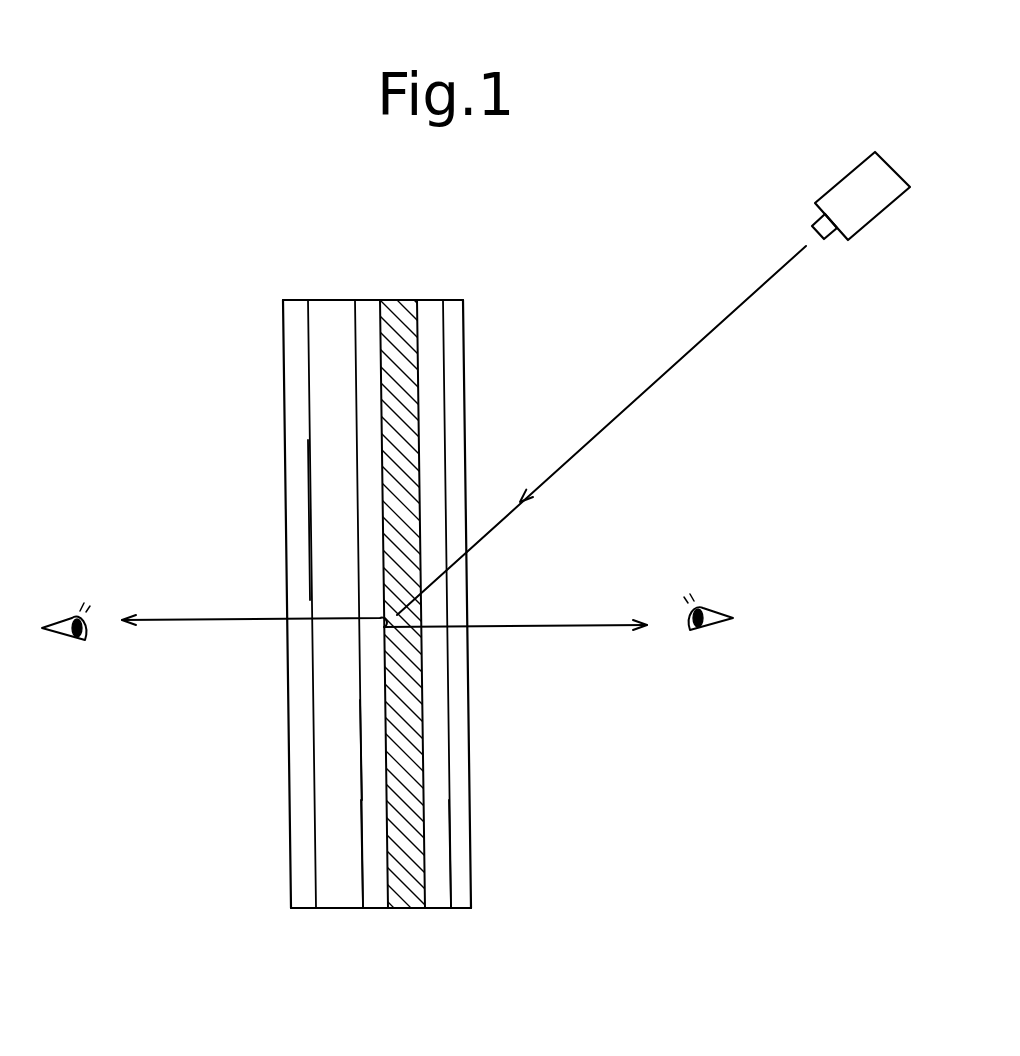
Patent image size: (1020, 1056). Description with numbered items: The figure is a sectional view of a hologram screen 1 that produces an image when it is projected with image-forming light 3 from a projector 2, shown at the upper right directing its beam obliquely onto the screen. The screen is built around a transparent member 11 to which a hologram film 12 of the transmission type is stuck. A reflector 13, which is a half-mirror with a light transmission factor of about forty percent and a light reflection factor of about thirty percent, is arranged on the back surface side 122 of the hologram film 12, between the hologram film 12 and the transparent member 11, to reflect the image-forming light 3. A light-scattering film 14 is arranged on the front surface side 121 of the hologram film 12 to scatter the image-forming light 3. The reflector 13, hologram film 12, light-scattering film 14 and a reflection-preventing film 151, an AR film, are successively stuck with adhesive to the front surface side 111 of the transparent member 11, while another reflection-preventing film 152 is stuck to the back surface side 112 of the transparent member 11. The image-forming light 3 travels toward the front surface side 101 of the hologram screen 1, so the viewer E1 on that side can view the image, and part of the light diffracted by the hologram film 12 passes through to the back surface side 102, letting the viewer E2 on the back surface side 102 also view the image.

The hologram screen 1 is at (262, 836).
The projector 2 is at (870, 208).
The image-forming light 3 is at (705, 335).
The transparent member 11 is at (328, 322).
The hologram film 12 is at (402, 318).
The reflector 13 is at (367, 757).
The light-scattering film 14 is at (440, 877).
The front surface side 101 is at (472, 770).
The back surface side 102 is at (288, 690).
The front surface side 111 is at (360, 830).
The back surface side 112 is at (310, 458).
The front surface side 121 is at (420, 455).
The back surface side 122 is at (380, 408).
The reflection-preventing film 151 is at (453, 378).
The reflection-preventing film 152 is at (295, 362).
The viewer E1 is at (708, 610).
The viewer E2 is at (58, 618).